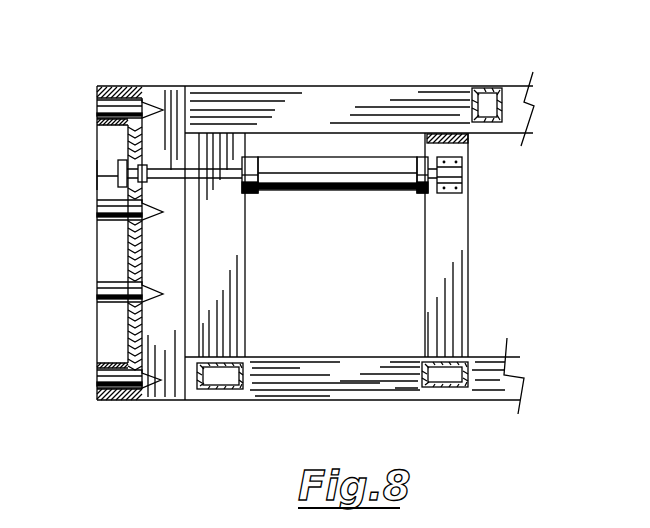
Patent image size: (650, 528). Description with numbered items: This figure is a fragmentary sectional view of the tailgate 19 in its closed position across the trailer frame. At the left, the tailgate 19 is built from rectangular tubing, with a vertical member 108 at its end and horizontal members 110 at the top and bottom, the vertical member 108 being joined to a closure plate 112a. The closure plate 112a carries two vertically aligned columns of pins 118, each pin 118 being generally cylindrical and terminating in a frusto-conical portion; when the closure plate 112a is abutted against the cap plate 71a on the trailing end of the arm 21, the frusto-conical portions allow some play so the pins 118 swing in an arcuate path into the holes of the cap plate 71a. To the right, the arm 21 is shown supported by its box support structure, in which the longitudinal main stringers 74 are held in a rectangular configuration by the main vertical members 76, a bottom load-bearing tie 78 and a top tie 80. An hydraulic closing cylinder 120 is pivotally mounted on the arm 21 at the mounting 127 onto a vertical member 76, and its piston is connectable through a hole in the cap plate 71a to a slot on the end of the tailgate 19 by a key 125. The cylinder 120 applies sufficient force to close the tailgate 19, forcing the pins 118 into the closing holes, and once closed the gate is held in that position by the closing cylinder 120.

The arm 21 is at (382, 87).
The main stringer 74 is at (309, 101).
The main vertical member 76 is at (240, 280).
The bottom load-bearing tie 78 is at (221, 375).
The top tie 80 is at (467, 143).
The vertical member 108 is at (110, 325).
The horizontal member 110 is at (107, 87).
The closure plate 112a is at (126, 121).
The pin 118 is at (114, 97).
The cap plate 71a is at (143, 97).
The tailgate 19 is at (97, 168).
The hydraulic closing cylinder 120 is at (316, 190).
The key 125 is at (97, 177).
The pivot mounting 127 is at (462, 188).